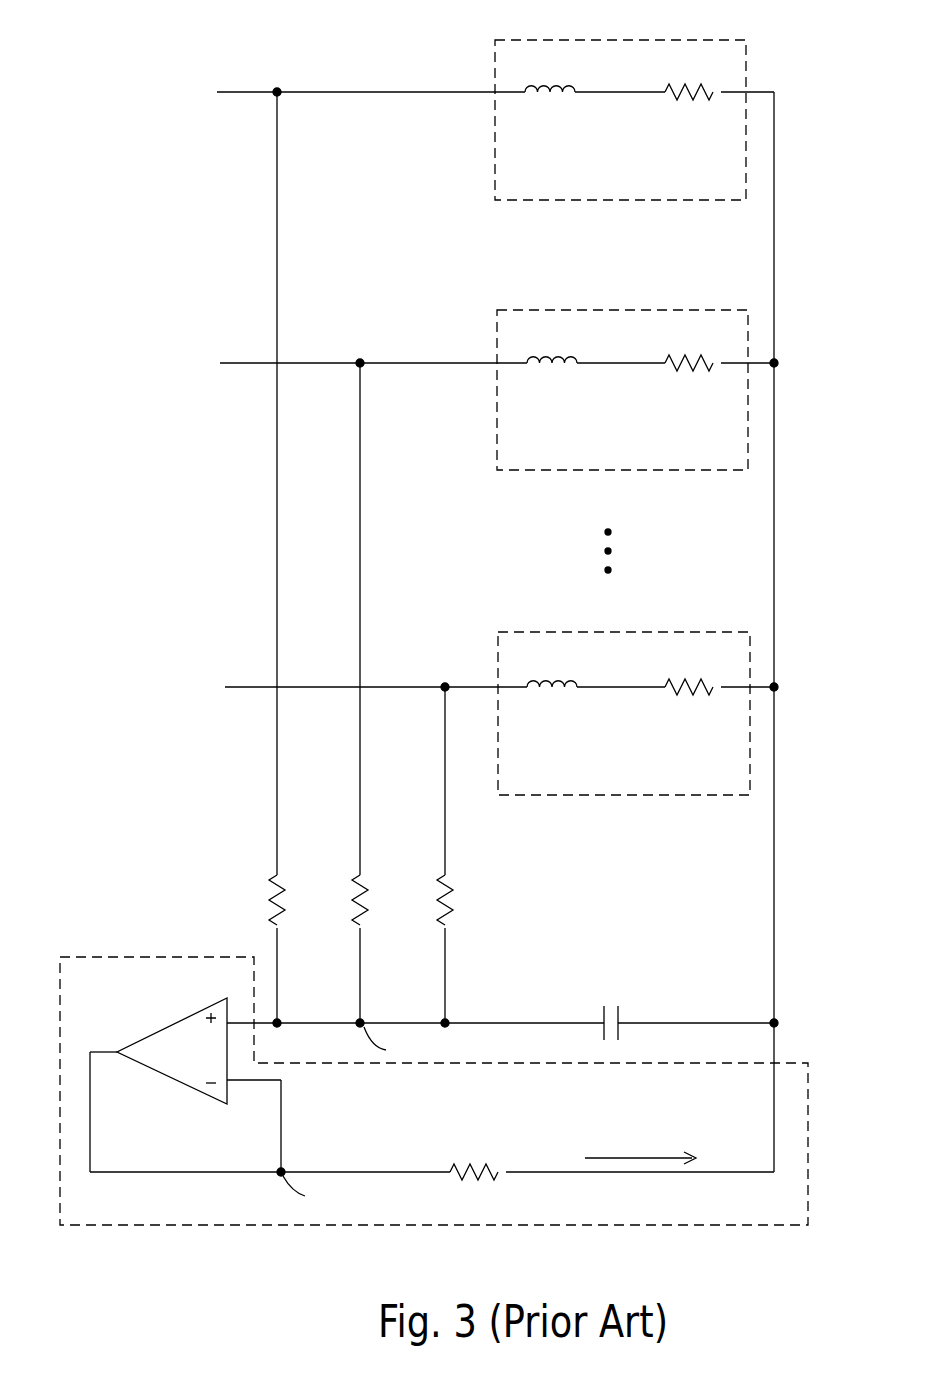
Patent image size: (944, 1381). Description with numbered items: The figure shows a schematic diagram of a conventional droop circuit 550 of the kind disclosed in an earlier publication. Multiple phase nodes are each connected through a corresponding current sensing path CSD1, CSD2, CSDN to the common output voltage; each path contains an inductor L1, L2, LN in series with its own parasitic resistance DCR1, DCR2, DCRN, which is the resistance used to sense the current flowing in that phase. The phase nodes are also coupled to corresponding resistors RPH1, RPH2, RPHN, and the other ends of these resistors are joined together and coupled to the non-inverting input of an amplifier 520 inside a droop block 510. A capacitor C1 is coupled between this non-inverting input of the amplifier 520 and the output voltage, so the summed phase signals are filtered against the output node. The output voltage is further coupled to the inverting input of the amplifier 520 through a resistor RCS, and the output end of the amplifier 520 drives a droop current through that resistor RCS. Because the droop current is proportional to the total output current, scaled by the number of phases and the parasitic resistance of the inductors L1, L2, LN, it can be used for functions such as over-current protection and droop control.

The prior art multiphase DCR current sensing circuit 550 is at (131, 40).
The current sensing / droop circuit block 510 is at (155, 957).
The amplifier 520 is at (172, 1023).
The current sensing device of phase 1 CSD1 is at (637, 40).
The current sensing device of phase 2 CSD2 is at (637, 310).
The current sensing device of phase N CSDN is at (637, 632).
The inductor L1 is at (529, 90).
The inductor L2 is at (531, 361).
The inductor LN is at (531, 685).
The DC resistance of inductor L1 DCR1 is at (712, 102).
The DC resistance of inductor L2 DCR2 is at (712, 373).
The DC resistance of inductor LN DCRN is at (712, 697).
The resistor RPH1 is at (292, 905).
The resistor RPH2 is at (375, 905).
The resistor RPHN is at (460, 905).
The capacitor C1 is at (615, 1006).
The resistor RCS is at (463, 1164).